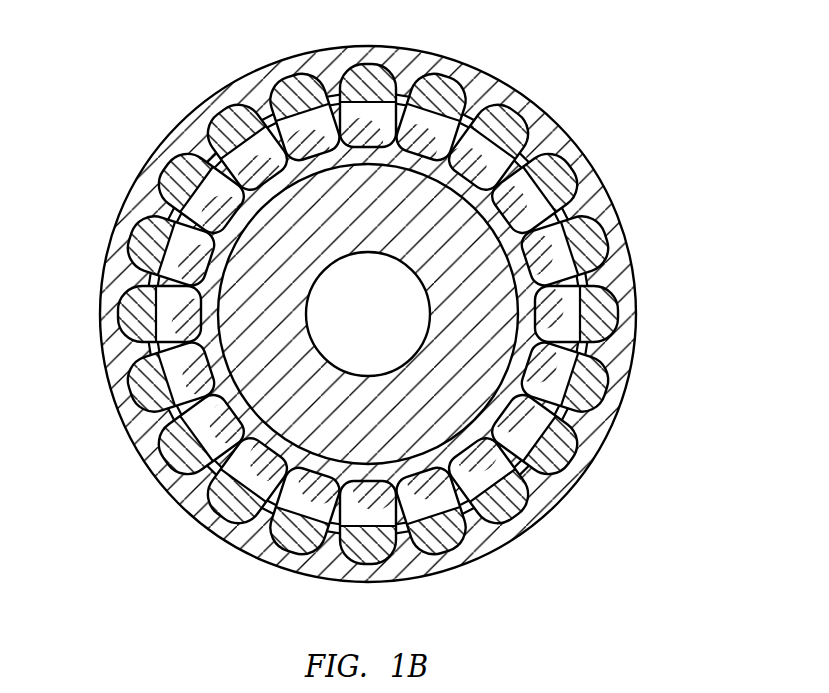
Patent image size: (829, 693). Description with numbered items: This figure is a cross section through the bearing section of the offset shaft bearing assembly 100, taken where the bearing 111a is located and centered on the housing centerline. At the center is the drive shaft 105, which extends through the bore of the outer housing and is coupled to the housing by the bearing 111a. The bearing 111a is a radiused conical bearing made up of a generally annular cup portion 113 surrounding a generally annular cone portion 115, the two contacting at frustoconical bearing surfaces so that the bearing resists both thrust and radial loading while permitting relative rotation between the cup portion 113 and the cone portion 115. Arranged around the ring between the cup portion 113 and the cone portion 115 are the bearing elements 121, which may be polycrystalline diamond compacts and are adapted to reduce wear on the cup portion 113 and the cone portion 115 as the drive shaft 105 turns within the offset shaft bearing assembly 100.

The offset shaft bearing assembly 100 is at (381, 301).
The bearing 111a is at (418, 315).
The cup portion 113 is at (483, 80).
The bearing elements 121 is at (600, 306).
The cone portion 115 is at (520, 392).
The drive shaft 105 is at (250, 393).